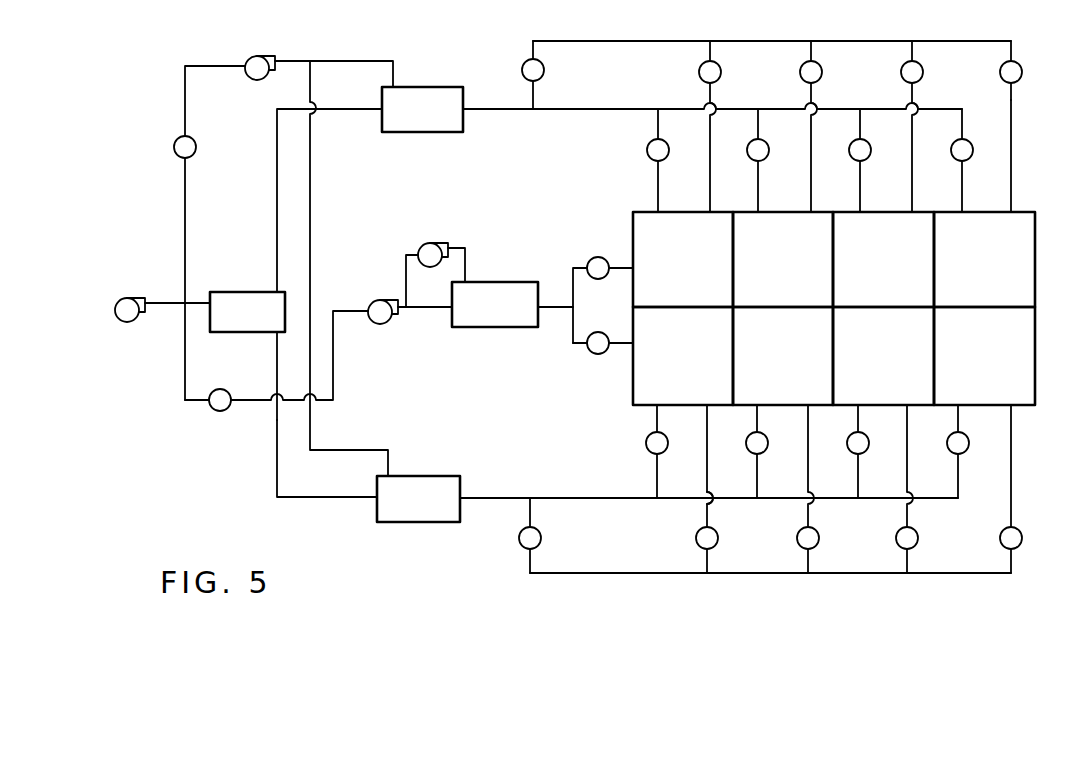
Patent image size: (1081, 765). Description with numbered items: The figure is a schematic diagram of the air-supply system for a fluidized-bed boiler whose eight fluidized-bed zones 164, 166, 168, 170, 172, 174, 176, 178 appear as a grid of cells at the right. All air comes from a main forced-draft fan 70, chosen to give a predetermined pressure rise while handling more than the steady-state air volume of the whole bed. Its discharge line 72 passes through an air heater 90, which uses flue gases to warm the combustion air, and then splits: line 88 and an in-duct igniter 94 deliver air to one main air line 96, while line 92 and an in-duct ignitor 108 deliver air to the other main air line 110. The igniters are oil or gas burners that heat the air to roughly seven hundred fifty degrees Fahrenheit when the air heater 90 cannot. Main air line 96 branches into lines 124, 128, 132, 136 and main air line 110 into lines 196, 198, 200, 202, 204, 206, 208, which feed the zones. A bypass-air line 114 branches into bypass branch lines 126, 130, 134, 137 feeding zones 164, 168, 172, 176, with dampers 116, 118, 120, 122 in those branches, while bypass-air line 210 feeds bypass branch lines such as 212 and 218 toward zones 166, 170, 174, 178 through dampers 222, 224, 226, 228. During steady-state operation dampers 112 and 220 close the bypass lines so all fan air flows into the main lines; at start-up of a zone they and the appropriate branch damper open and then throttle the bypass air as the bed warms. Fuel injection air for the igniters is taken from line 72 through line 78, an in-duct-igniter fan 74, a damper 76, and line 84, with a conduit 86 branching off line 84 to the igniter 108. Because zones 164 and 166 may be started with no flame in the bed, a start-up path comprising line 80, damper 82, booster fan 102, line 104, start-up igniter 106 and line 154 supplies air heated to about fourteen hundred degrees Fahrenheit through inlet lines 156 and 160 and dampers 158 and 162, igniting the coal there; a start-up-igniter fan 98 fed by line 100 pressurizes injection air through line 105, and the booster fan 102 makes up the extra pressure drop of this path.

The main forced-draft fan 70 is at (123, 297).
The line 72 is at (168, 302).
The in-duct-igniter fan 74 is at (260, 56).
The damper 76 is at (196, 146).
The line 78 is at (184, 212).
The line 80 is at (184, 338).
The damper 82 is at (223, 389).
The line 84 is at (336, 60).
The conduit 86 is at (311, 178).
The line 88 is at (276, 182).
The air heater 90 is at (243, 291).
The line 92 is at (276, 430).
The in-duct igniter 94 is at (416, 133).
The main air line 96 is at (486, 110).
The start-up-igniter fan 98 is at (424, 244).
The line 100 is at (405, 265).
The booster fan 102 is at (386, 326).
The line 104 is at (436, 309).
The line 105 is at (467, 258).
The start-up igniter 106 is at (515, 282).
The in-duct ignitor 108 is at (432, 476).
The main air line 110 is at (516, 497).
The damper 112 is at (545, 70).
The bypass-air line 114 is at (654, 41).
The damper 116 is at (722, 72).
The damper 118 is at (822, 72).
The damper 120 is at (923, 72).
The damper 122 is at (1001, 75).
The branch line 124 is at (659, 200).
The bypass branch line 126 is at (711, 200).
The branch line 128 is at (759, 200).
The bypass branch line 130 is at (812, 200).
The branch line 132 is at (861, 200).
The bypass branch line 134 is at (913, 200).
The branch line 136 is at (963, 200).
The bypass branch line 137 is at (1012, 200).
The line 154 is at (553, 312).
The inlet line 156 is at (568, 272).
The damper 158 is at (597, 256).
The inlet line 160 is at (575, 345).
The damper 162 is at (597, 355).
The fluidized-bed zone 164 is at (683, 259).
The fluidized-bed zone 166 is at (683, 356).
The fluidized-bed zone 168 is at (783, 259).
The fluidized-bed zone 170 is at (783, 356).
The fluidized-bed zone 172 is at (883, 259).
The fluidized-bed zone 174 is at (883, 356).
The fluidized-bed zone 176 is at (984, 259).
The fluidized-bed zone 178 is at (984, 356).
The branch line 196 is at (658, 484).
The duct 198 is at (708, 484).
The branch line 200 is at (758, 484).
The duct 202 is at (809, 484).
The branch line 204 is at (859, 484).
The duct 206 is at (908, 484).
The branch line 208 is at (959, 484).
The bypass-air line 210 is at (552, 572).
The bypass branch line 212 is at (711, 528).
The bypass branch line 218 is at (1012, 484).
The damper 220 is at (541, 535).
The damper 222 is at (718, 538).
The damper 224 is at (819, 538).
The damper 226 is at (918, 538).
The damper 228 is at (1021, 531).